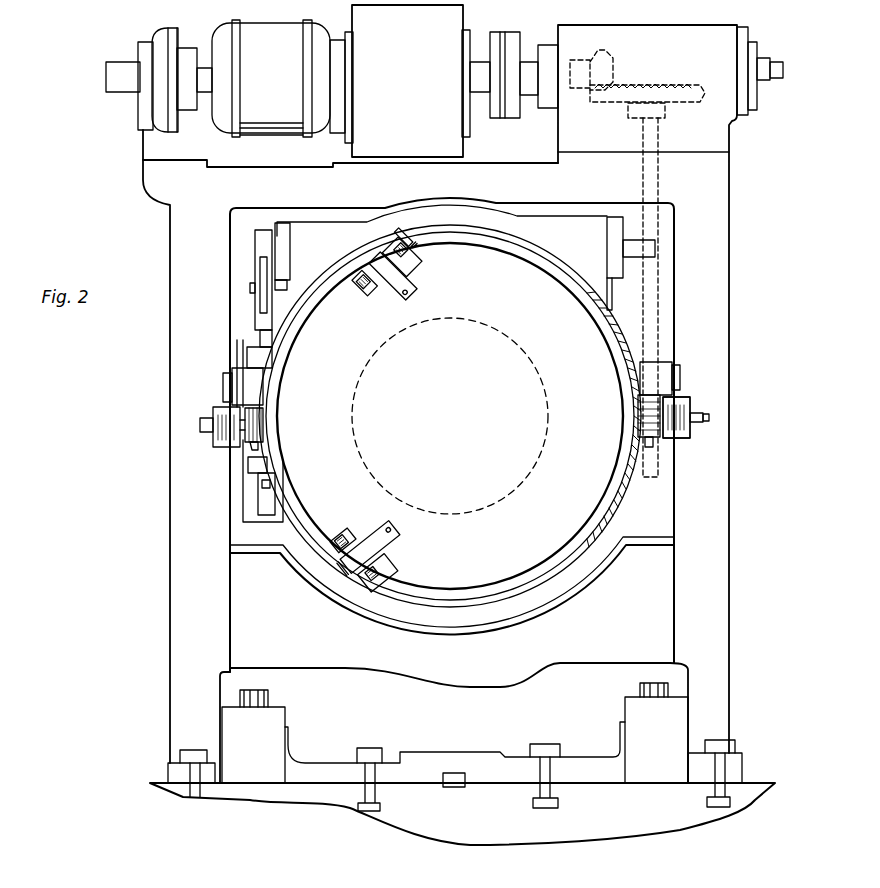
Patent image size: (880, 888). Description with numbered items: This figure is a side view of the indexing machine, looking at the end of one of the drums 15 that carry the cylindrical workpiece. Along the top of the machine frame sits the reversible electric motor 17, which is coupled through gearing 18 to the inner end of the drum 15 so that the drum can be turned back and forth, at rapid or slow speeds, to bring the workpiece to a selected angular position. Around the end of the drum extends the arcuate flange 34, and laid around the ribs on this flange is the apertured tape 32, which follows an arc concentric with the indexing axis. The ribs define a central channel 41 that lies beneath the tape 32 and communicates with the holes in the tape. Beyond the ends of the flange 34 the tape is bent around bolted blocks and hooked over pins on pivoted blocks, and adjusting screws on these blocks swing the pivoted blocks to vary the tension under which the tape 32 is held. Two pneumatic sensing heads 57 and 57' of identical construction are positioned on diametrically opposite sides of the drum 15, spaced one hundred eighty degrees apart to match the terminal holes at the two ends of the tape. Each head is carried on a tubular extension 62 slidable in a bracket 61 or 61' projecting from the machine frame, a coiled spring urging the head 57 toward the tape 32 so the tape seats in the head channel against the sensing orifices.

The drum 15 is at (608, 480).
The electric motor 17 is at (277, 37).
The gearing 18 is at (658, 392).
The tape 32 is at (418, 238).
The arcuate flange 34 is at (484, 240).
The central channel 41 is at (546, 262).
The sensing head 57 is at (624, 411).
The second sensing head 57' is at (283, 429).
The bracket 61 is at (686, 431).
The bracket 61' is at (213, 416).
The tubular extension 62 is at (694, 417).